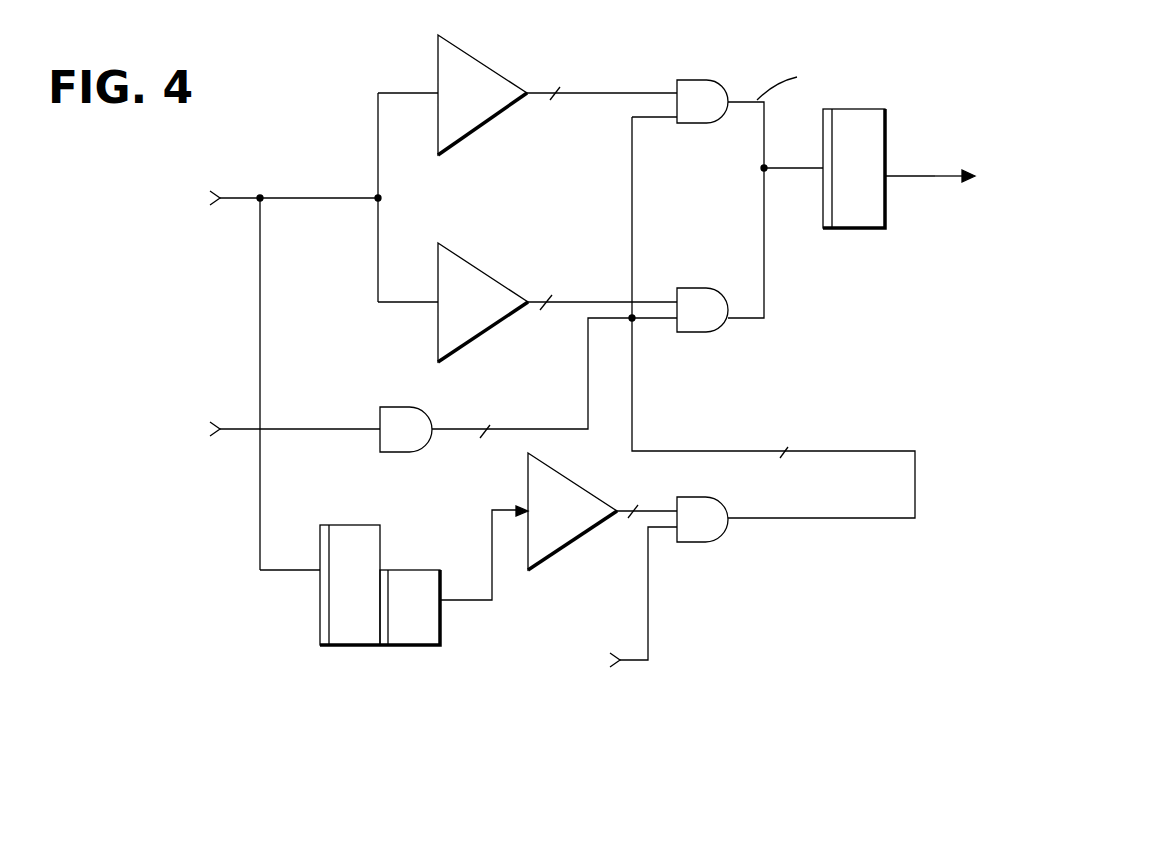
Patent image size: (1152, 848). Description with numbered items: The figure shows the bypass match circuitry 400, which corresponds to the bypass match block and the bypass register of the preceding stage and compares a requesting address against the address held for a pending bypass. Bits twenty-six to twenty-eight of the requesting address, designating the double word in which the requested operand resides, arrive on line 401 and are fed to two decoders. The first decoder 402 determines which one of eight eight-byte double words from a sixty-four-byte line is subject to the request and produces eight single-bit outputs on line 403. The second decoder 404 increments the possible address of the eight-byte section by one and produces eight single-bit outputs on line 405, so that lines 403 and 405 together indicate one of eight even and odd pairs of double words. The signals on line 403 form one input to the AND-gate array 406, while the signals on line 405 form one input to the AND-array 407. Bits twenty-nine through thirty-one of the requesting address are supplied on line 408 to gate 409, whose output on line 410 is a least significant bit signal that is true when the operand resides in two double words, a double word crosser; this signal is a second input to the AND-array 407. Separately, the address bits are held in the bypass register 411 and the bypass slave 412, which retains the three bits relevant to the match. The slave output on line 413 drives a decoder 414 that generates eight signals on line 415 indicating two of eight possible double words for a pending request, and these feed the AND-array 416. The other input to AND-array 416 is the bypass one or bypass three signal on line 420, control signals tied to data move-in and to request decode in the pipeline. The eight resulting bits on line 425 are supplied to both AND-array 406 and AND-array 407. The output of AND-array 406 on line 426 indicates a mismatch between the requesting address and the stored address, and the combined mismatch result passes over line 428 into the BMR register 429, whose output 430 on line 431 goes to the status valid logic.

The bypass match circuitry 400 is at (155, 627).
The line 401 is at (232, 200).
The first decoder 402 is at (497, 70).
The line 403 is at (580, 90).
The second decoder 404 is at (510, 285).
The line 405 is at (610, 300).
The AND-gate array 406 is at (675, 78).
The AND-array 407 is at (700, 287).
The line 408 is at (238, 432).
The gate 409 is at (427, 408).
The line 410 is at (587, 402).
The bypass register 411 is at (355, 525).
The bypass slave 412 is at (405, 570).
The line 413 is at (505, 507).
The decoder 414 is at (597, 497).
The line 415 is at (648, 510).
The AND-array 416 is at (718, 497).
The line 420 is at (650, 637).
The line 425 is at (882, 450).
The line 426 is at (736, 98).
The BMR input line 428 is at (787, 168).
The BMR register 429 is at (870, 108).
The BMR output 430 is at (885, 173).
The output line to status valid logic 431 is at (938, 175).